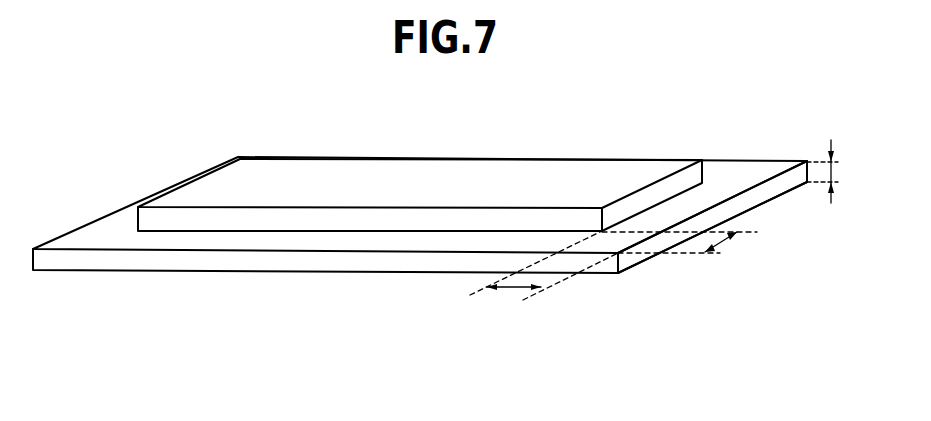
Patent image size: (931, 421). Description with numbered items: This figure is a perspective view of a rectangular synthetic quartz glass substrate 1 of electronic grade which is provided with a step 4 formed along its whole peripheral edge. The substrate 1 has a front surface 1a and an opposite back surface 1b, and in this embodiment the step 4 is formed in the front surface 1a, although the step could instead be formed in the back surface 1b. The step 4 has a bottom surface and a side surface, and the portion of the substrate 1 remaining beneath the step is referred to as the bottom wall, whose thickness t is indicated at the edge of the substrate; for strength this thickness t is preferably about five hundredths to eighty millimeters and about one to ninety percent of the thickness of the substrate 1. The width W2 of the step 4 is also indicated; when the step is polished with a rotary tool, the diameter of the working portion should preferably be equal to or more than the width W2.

The synthetic quartz glass substrate 1 is at (420, 211).
The front surface 1a is at (568, 180).
The back surface 1b is at (363, 274).
The step 4 is at (707, 200).
The thickness of the bottom wall t is at (834, 166).
The width of the step W2 is at (515, 290).